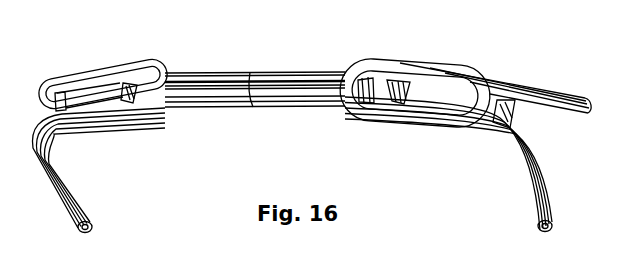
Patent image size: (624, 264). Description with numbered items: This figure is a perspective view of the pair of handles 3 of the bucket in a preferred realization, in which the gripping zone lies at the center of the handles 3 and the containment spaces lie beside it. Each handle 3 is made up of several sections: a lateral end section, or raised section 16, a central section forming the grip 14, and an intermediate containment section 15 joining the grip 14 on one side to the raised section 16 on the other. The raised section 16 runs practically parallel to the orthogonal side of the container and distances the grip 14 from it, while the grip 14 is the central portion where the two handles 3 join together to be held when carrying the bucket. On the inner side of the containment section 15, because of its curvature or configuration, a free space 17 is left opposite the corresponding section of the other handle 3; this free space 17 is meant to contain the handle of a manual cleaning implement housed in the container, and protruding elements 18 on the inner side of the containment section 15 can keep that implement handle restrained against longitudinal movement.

The handle 3 is at (203, 62).
The grip 14 is at (233, 88).
The containment section 15 is at (103, 63).
The raised section 16 is at (557, 88).
The free space 17 is at (363, 72).
The bracket 18 is at (58, 78).